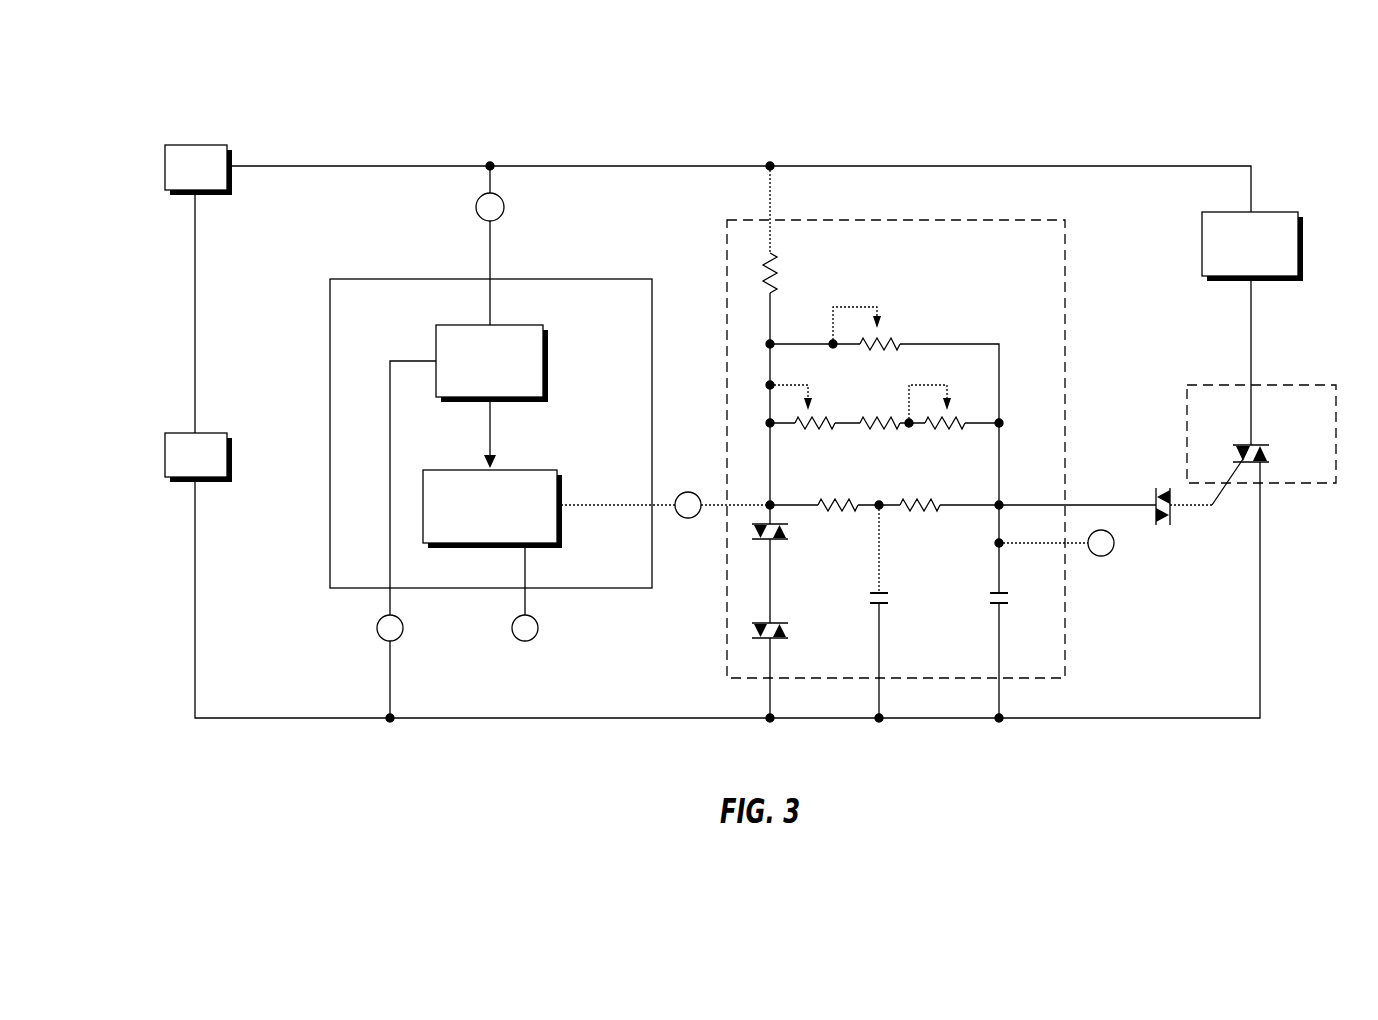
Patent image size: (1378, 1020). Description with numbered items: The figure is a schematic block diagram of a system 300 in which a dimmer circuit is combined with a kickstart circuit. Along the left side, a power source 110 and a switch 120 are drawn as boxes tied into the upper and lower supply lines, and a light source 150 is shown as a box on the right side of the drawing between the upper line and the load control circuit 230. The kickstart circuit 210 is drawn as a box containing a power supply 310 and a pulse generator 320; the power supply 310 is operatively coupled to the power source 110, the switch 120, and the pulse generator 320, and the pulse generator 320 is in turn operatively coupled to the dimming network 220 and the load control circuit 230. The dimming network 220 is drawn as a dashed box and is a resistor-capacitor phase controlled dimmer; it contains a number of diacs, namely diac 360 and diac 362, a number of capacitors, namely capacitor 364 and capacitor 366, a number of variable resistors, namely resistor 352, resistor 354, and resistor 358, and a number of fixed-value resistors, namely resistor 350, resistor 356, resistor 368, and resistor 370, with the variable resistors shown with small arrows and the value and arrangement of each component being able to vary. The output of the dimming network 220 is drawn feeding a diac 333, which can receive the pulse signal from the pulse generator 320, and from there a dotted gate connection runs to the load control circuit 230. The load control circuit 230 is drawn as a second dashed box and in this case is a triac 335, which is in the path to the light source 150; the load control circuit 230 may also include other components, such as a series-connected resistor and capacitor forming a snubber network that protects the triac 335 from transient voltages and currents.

The system 300 is at (246, 54).
The power source 110 is at (198, 170).
The switch 120 is at (198, 457).
The light source 150 is at (1288, 212).
The kickstart circuit 210 is at (330, 507).
The dimming network 220 is at (1065, 640).
The load control circuit 230 is at (1296, 485).
The power supply 310 is at (533, 325).
The pulse generator 320 is at (545, 470).
The diac 333 is at (1154, 494).
The triac 335 is at (1257, 445).
The resistor 350 is at (778, 276).
The resistor 352 is at (886, 340).
The resistor 354 is at (806, 437).
The resistor 356 is at (889, 414).
The resistor 358 is at (957, 436).
The diac 360 is at (781, 541).
The diac 362 is at (781, 640).
The capacitor 364 is at (890, 598).
The capacitor 366 is at (990, 598).
The resistor 368 is at (836, 497).
The resistor 370 is at (913, 516).